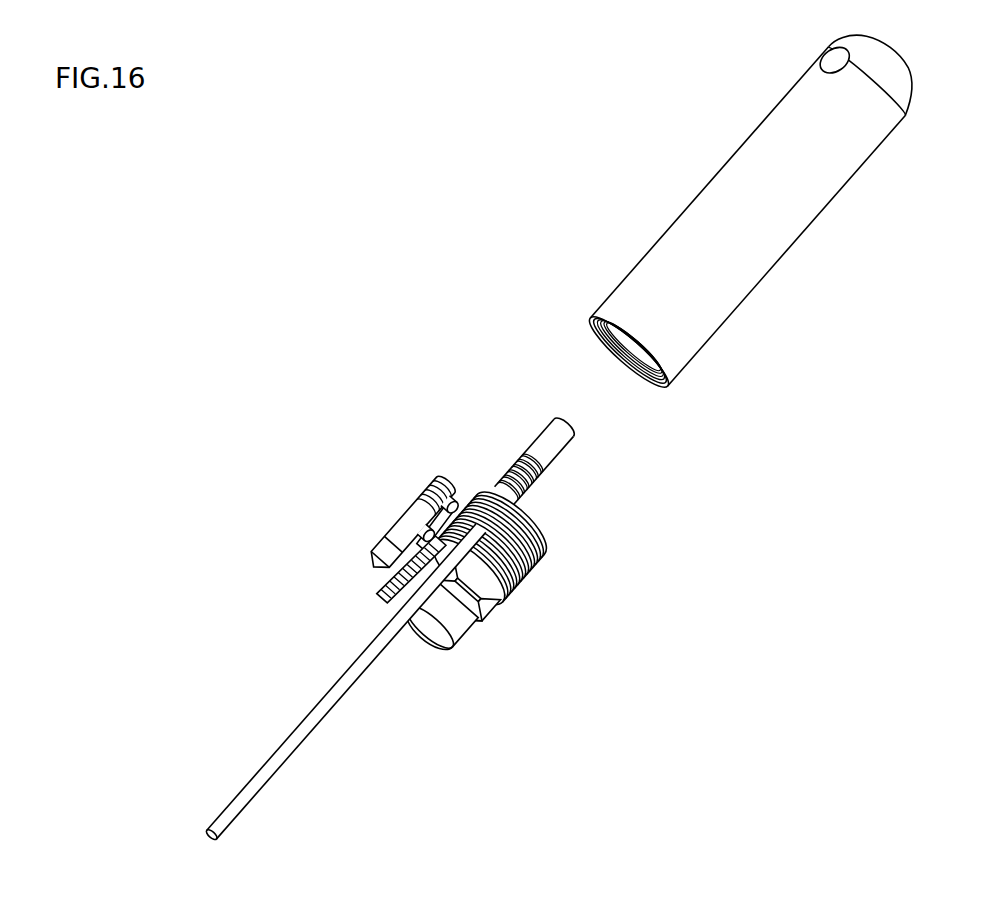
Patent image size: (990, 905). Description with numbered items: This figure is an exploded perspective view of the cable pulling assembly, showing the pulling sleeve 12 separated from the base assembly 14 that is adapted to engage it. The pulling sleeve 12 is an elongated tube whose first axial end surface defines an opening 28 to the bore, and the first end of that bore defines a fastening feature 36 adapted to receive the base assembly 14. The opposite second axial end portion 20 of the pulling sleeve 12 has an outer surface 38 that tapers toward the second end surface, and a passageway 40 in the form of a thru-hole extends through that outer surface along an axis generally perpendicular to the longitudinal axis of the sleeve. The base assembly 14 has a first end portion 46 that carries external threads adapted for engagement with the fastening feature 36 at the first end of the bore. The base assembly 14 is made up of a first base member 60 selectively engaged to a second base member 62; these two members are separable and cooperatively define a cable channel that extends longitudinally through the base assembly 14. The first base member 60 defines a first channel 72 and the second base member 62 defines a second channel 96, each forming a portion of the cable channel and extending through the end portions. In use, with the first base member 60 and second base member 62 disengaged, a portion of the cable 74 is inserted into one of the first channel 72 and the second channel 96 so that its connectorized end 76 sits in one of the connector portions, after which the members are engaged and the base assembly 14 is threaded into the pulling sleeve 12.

The pulling sleeve 12 is at (894, 193).
The base assembly 14 is at (469, 644).
The second axial end portion 20 is at (892, 130).
The opening 28 is at (658, 382).
The fastening feature 36 is at (627, 357).
The outer surface 38 is at (907, 75).
The passageway 40 is at (827, 66).
The first end portion 46 is at (555, 558).
The first base member 60 is at (405, 501).
The second base member 62 is at (522, 603).
The first channel 72 is at (386, 580).
The cable 74 is at (268, 780).
The connectorized end 76 is at (557, 463).
The second channel 96 is at (419, 635).